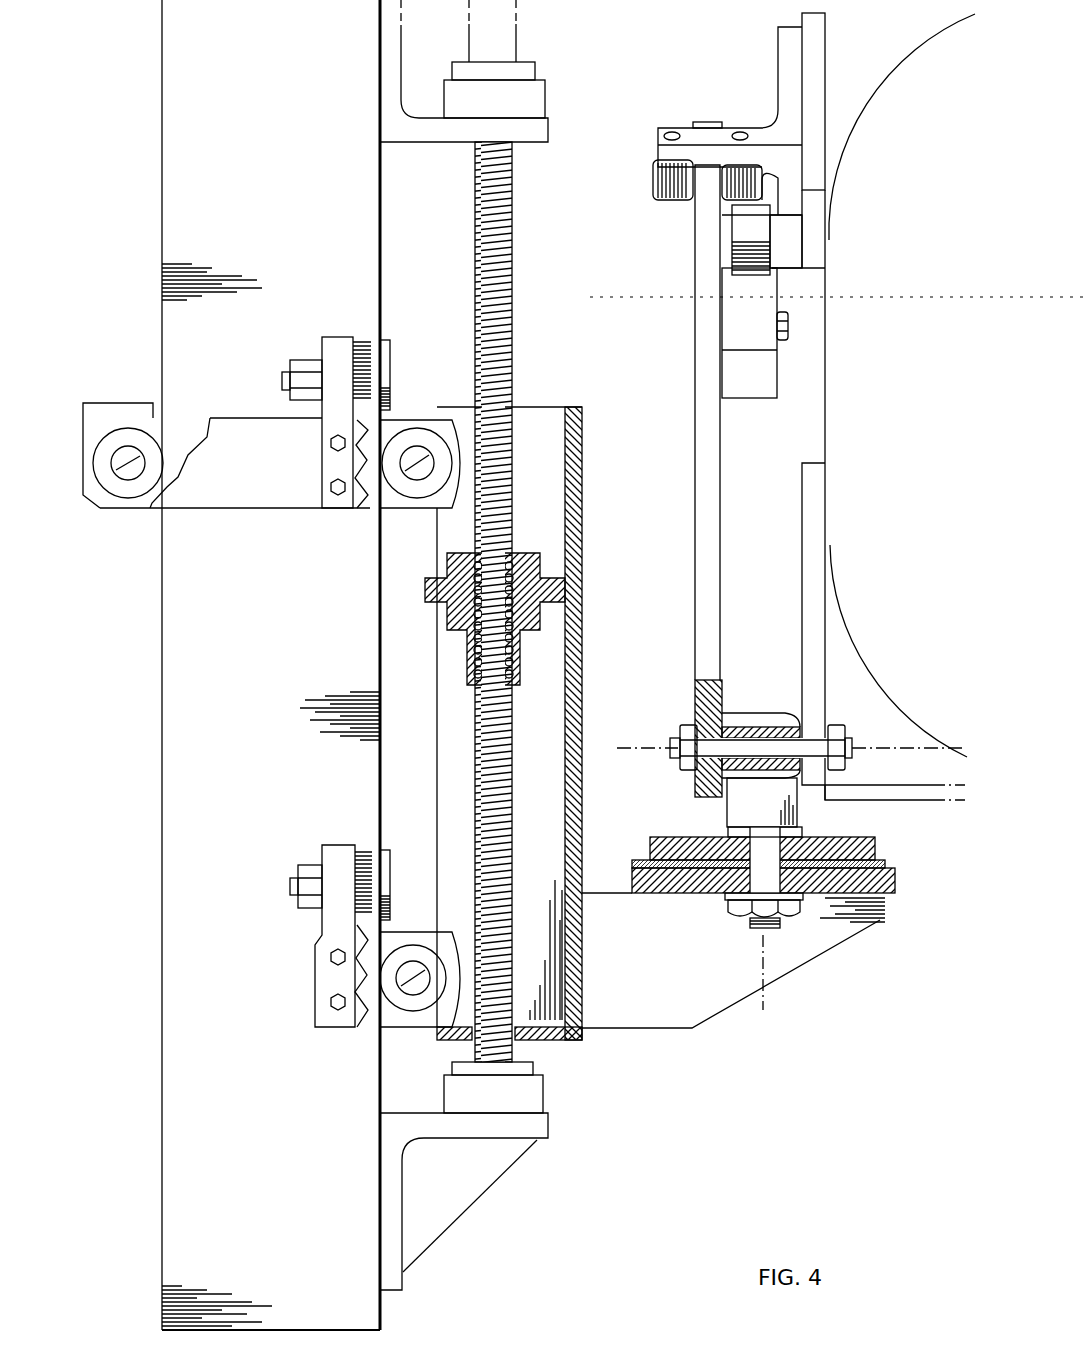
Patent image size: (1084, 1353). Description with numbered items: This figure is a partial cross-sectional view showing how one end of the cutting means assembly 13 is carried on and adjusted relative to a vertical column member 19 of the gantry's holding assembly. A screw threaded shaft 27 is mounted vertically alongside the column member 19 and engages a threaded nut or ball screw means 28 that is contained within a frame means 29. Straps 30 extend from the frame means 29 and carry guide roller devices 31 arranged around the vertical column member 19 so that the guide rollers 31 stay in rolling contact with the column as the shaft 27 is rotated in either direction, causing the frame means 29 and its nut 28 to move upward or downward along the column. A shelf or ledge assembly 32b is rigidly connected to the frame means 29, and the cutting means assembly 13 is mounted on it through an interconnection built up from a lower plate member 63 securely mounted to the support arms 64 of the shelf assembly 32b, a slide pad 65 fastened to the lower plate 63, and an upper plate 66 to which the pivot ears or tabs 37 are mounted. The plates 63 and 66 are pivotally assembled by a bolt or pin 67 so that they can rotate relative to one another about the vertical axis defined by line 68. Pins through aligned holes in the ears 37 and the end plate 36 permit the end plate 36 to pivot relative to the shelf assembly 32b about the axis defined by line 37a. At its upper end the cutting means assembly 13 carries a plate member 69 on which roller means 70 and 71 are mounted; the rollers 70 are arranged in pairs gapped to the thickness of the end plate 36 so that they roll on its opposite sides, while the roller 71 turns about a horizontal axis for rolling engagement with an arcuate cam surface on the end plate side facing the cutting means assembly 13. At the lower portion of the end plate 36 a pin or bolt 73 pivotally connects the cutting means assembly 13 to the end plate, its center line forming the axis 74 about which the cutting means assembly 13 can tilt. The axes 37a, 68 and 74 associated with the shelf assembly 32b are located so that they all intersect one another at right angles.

The cutting means assembly 13 is at (825, 430).
The vertical column member 19 is at (242, 642).
The screw threaded shaft 27 is at (512, 263).
The threaded nut or ball screw means 28 is at (456, 632).
The frame means 29 is at (585, 625).
The strap 30 is at (232, 510).
The guide roller device 31 is at (414, 420).
The shelf or ledge assembly 32b is at (718, 1033).
The end plate 36 is at (693, 455).
The pivot ear or tab 37 is at (748, 808).
The pivot axis line 37a is at (762, 745).
The lower plate member 63 is at (895, 885).
The support arm 64 is at (636, 959).
The slide pad 65 is at (885, 860).
The upper plate 66 is at (650, 850).
The bolt or pin 67 is at (752, 935).
The vertical axis line 68 is at (768, 997).
The plate member 69 is at (828, 18).
The roller means 70 is at (682, 202).
The roller means 71 is at (730, 257).
The pin or bolt 73 is at (672, 763).
The pivot axis 74 is at (626, 746).